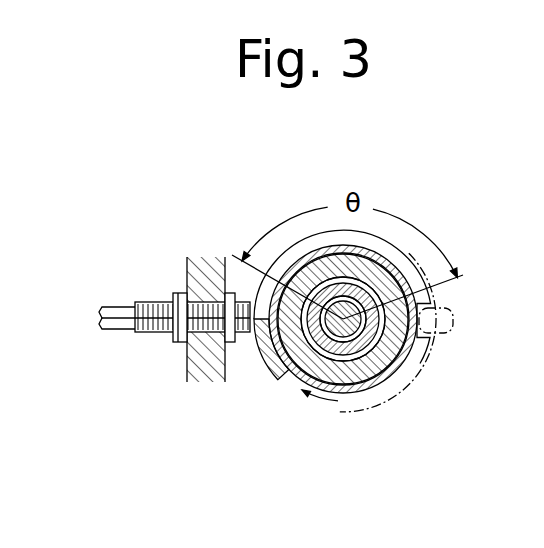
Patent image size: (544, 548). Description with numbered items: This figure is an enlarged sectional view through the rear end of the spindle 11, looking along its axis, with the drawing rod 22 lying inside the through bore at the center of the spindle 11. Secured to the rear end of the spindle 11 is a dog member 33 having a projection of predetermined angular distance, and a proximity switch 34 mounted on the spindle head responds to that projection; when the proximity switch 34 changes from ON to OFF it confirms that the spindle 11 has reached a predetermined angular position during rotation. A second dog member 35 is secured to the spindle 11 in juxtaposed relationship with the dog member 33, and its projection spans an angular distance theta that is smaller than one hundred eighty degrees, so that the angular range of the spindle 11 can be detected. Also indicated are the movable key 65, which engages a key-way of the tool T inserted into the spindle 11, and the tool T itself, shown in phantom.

The spindle 11 is at (380, 272).
The drawing rod 22 is at (348, 330).
The dog member 33 is at (263, 357).
The proximity switch 34 is at (197, 334).
The dog member 35 is at (306, 245).
The movable key 65 is at (453, 320).
The tool T is at (398, 377).